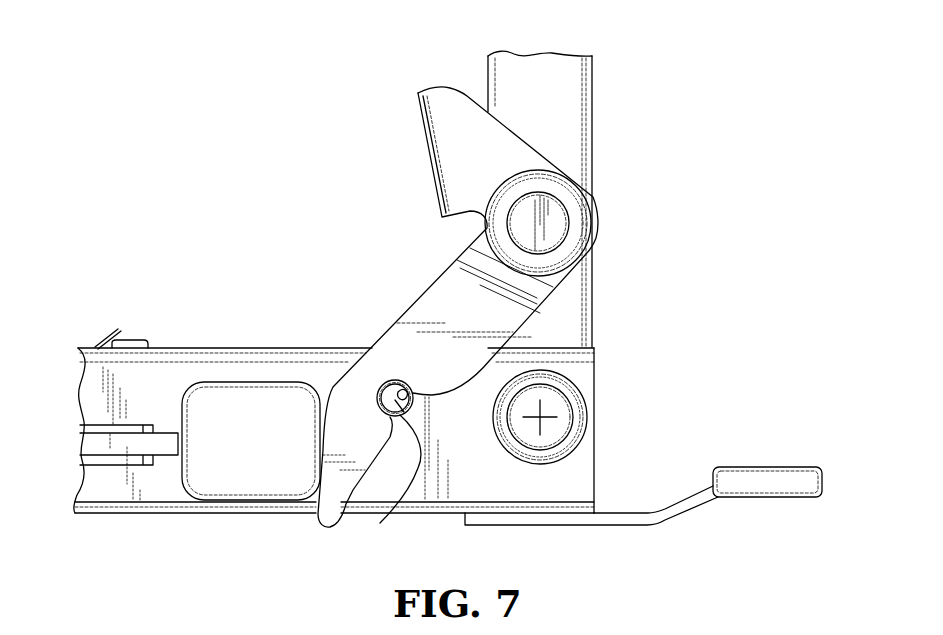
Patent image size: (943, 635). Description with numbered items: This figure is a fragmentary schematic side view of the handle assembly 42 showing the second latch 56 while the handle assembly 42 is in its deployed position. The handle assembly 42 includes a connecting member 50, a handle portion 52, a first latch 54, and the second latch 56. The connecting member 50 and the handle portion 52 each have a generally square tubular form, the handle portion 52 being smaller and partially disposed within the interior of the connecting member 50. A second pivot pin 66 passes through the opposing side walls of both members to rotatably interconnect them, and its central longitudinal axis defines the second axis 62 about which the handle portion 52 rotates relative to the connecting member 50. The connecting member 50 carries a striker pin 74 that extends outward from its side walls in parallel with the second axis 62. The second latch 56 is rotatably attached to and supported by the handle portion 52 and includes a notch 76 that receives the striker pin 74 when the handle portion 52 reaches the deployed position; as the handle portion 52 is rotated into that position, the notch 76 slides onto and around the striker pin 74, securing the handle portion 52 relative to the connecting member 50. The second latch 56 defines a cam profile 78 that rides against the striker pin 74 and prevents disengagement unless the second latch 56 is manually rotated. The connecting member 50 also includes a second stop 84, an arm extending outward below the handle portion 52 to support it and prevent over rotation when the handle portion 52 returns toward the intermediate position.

The handle assembly 42 is at (380, 128).
The connecting member 50 is at (165, 385).
The handle portion 52 is at (570, 110).
The first latch 54 is at (227, 463).
The second latch 56 is at (463, 118).
The second axis 62 is at (545, 412).
The second pivot pin 66 is at (550, 395).
The striker pin 74 is at (395, 405).
The notch 76 is at (407, 383).
The cam profile 78 is at (378, 401).
The second stop 84 is at (755, 477).